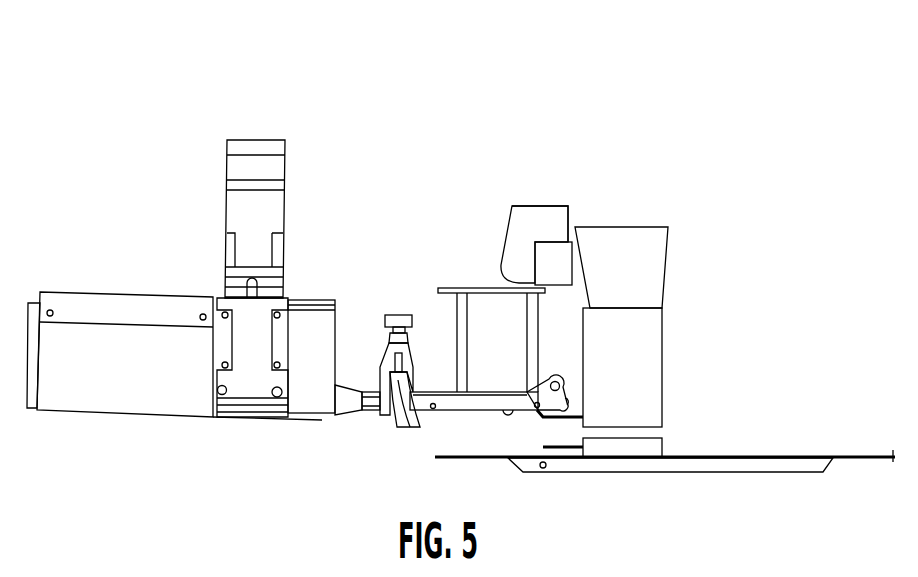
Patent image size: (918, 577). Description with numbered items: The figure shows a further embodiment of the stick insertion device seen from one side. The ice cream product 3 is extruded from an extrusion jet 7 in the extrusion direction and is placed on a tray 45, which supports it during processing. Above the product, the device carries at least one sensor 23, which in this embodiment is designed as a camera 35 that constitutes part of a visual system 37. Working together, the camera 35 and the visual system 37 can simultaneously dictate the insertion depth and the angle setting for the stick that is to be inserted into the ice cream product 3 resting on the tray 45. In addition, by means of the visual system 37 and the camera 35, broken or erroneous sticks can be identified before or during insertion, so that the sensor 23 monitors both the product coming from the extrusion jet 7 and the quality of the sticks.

The extrusion jet 7 is at (318, 96).
The sensor 23 is at (517, 233).
The visual system 37 is at (533, 217).
The camera 35 is at (555, 255).
The ice cream product 3 is at (667, 445).
The tray 45 is at (650, 477).